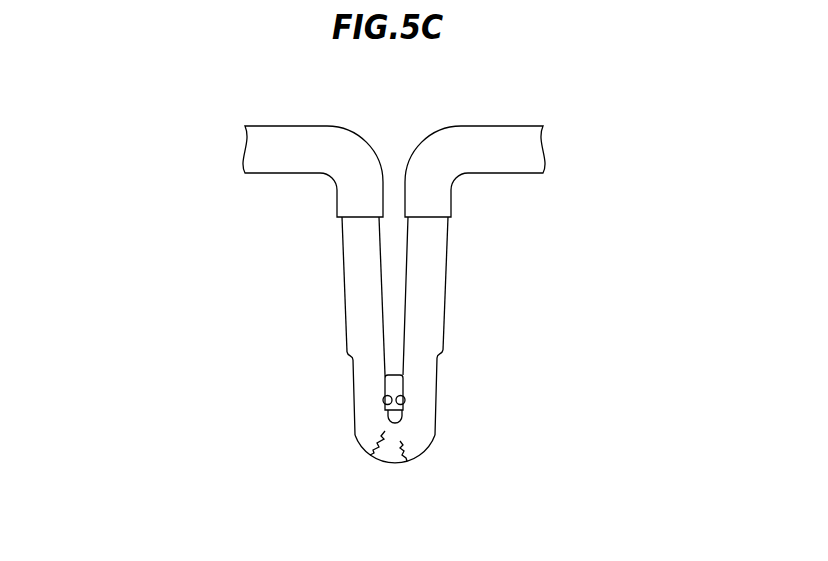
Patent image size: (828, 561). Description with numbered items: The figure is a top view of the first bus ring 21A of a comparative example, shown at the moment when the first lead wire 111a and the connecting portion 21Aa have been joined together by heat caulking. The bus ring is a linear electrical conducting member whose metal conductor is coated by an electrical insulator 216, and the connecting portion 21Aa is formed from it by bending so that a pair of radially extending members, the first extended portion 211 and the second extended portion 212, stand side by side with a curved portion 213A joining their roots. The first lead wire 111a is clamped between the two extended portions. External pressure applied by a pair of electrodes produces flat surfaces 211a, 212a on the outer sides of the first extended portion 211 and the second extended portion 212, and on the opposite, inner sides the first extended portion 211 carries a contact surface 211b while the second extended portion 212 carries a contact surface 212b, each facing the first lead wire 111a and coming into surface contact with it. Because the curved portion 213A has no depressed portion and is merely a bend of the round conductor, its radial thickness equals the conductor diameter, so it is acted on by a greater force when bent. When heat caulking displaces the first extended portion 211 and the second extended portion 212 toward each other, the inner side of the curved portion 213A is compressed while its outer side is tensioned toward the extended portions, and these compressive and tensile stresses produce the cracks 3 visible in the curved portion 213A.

The first bus ring 21A is at (198, 83).
The connecting portion 21Aa is at (262, 312).
The electrical insulator 216 is at (507, 135).
The first extended portion 211 is at (353, 263).
The second extended portion 212 is at (435, 263).
The flat surface 211a is at (353, 380).
The flat surface 212a is at (437, 387).
The first lead wire 111a is at (397, 387).
The contact surface 211b is at (383, 401).
The contact surface 212b is at (405, 403).
The curved portion 213A is at (390, 452).
The cracks 3 is at (377, 443).